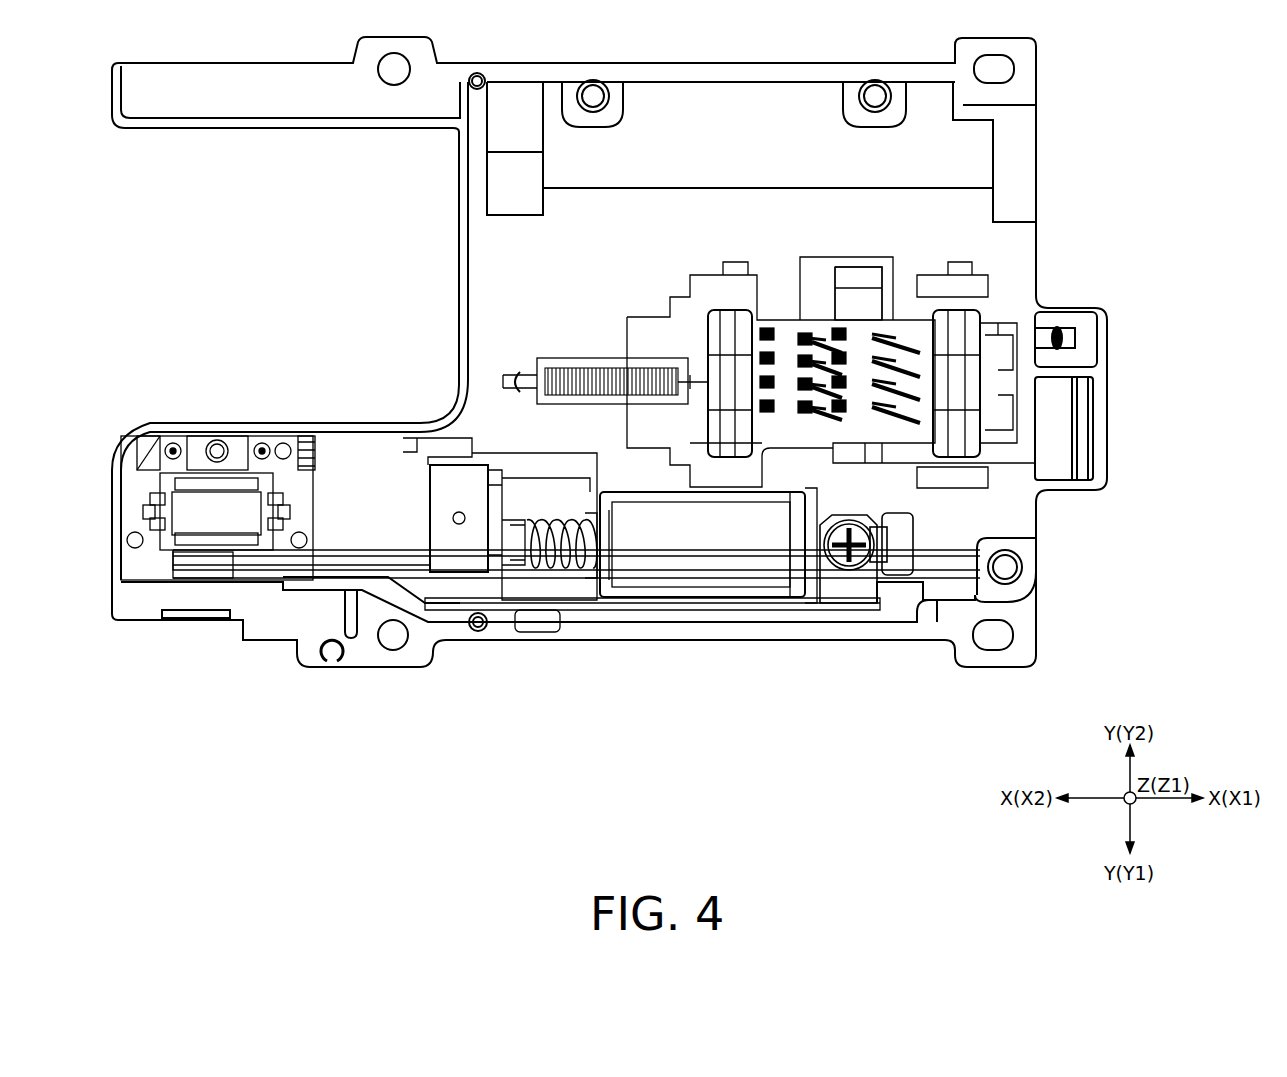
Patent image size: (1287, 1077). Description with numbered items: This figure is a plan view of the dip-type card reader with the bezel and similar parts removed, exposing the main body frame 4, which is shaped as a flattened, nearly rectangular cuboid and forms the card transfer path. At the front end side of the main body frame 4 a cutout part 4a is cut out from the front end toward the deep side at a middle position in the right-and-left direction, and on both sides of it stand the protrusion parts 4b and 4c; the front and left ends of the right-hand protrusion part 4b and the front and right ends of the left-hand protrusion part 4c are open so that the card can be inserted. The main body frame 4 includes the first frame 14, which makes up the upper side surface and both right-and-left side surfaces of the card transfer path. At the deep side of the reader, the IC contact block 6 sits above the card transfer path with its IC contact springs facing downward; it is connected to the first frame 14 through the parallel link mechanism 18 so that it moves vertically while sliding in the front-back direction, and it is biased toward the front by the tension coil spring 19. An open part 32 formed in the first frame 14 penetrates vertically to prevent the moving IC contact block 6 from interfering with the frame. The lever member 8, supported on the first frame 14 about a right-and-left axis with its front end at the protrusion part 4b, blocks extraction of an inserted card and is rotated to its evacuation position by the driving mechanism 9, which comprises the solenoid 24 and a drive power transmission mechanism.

The main body frame 4 is at (609, 338).
The first frame 14 is at (728, 63).
The cutout part 4a is at (118, 287).
The protrusion part 4b is at (112, 538).
The protrusion part 4c is at (112, 92).
The IC contact block 6 is at (818, 320).
The lever member 8 is at (287, 572).
The driving mechanism 9 is at (651, 685).
The parallel link mechanism 18 is at (735, 312).
The tension coil spring 19 is at (571, 372).
The solenoid 24 is at (708, 592).
The open part 32 is at (905, 300).